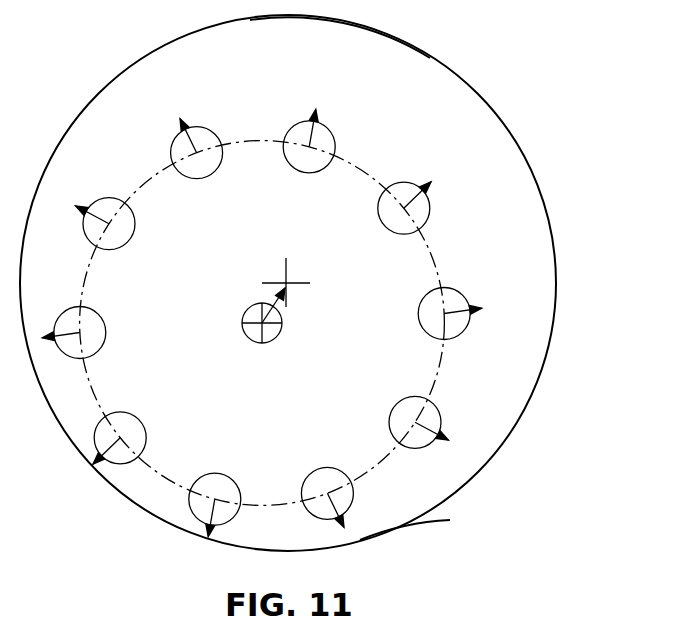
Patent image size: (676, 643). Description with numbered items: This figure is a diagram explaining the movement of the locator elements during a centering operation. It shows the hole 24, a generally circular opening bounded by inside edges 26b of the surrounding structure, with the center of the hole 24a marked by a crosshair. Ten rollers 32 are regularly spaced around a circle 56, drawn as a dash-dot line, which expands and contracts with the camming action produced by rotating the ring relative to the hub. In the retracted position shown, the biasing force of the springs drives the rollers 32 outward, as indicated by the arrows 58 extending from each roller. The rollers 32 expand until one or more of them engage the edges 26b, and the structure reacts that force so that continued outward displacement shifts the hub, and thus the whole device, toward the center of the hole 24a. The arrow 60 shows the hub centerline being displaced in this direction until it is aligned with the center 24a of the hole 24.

The hole 24 is at (473, 89).
The center of the hole 24a is at (285, 283).
The edges 26b is at (290, 17).
The rollers 32 is at (190, 168).
The circle 56 is at (437, 258).
The arrows 58 is at (280, 315).
The arrow 60 is at (280, 318).